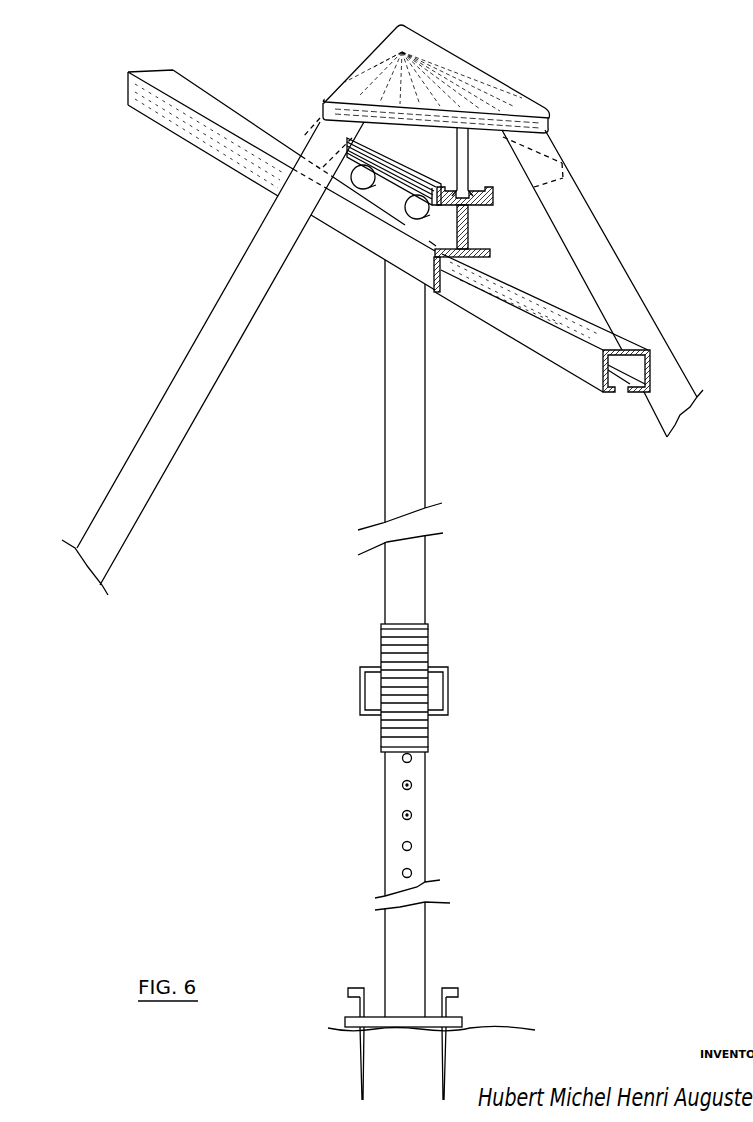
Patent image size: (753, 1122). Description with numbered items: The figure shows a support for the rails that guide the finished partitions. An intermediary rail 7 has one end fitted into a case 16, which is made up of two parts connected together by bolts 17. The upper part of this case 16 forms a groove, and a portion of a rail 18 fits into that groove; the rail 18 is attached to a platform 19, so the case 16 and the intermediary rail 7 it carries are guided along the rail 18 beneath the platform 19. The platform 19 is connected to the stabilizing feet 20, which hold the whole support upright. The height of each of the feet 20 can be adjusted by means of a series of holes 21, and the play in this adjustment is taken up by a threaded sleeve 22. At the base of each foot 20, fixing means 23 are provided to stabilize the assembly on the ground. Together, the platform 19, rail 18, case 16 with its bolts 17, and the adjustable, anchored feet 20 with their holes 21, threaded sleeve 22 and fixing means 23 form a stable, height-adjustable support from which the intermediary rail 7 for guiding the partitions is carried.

The intermediary rail 7 is at (235, 122).
The case 16 is at (363, 232).
The bolt 17 is at (416, 206).
The rail 18 is at (465, 174).
The platform 19 is at (483, 92).
The stabilizing foot 20 is at (183, 397).
The hole 21 is at (406, 815).
The threaded sleeve 22 is at (405, 640).
The fixing means 23 is at (443, 1045).